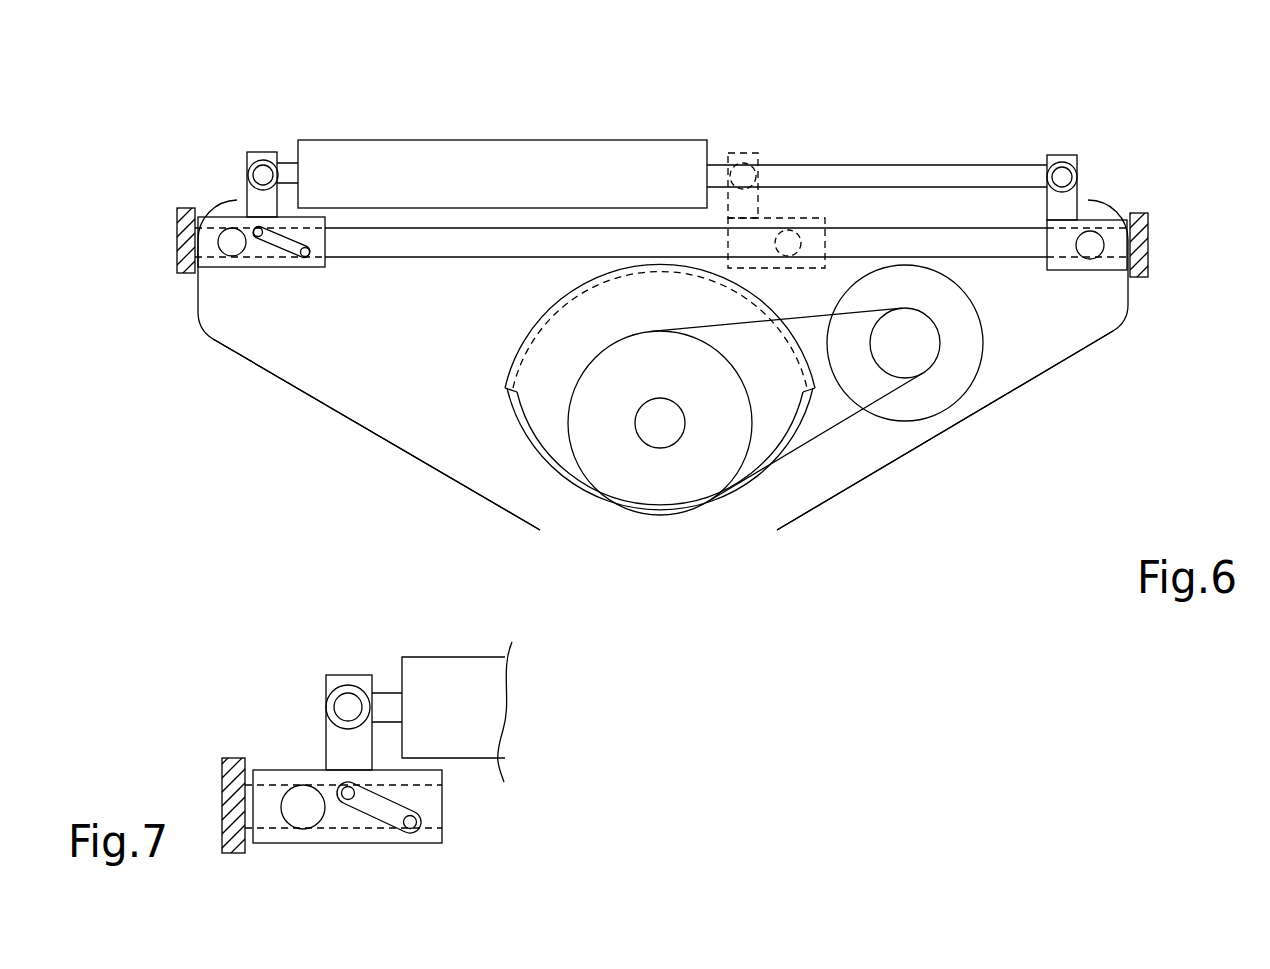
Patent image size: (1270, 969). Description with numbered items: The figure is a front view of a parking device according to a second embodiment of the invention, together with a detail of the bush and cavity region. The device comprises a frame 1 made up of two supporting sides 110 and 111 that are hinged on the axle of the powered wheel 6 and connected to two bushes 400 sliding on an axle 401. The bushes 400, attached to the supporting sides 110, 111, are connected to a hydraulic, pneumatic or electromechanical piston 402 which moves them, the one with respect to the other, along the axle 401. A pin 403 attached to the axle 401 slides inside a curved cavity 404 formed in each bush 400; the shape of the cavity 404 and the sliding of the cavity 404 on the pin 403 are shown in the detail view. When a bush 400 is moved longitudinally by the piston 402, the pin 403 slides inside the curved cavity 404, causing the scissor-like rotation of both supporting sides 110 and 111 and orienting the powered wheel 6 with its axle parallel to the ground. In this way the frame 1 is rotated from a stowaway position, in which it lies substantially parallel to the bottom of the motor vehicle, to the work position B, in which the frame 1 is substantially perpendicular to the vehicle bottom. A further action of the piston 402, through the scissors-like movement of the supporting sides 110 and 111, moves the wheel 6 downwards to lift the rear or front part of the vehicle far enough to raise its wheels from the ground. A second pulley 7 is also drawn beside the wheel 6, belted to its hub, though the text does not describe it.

In FIG. 6, the frame 1 is at (338, 395).
In FIG. 6, the powered wheel 6 is at (717, 562).
In FIG. 6, the pulley 7 is at (932, 400).
In FIG. 6, the supporting side 110 is at (432, 440).
In FIG. 6, the supporting side 111 is at (860, 467).
In FIG. 6, the bush 400 is at (298, 269).
In FIG. 7, the bush 400 is at (352, 843).
In FIG. 6, the axle 401 is at (453, 253).
In FIG. 6, the piston 402 is at (572, 134).
In FIG. 6, the pin 403 is at (284, 248).
In FIG. 7, the pin 403 is at (423, 822).
In FIG. 6, the cavity 404 is at (268, 229).
In FIG. 7, the cavity 404 is at (358, 797).
In FIG. 6, the work position B is at (138, 315).